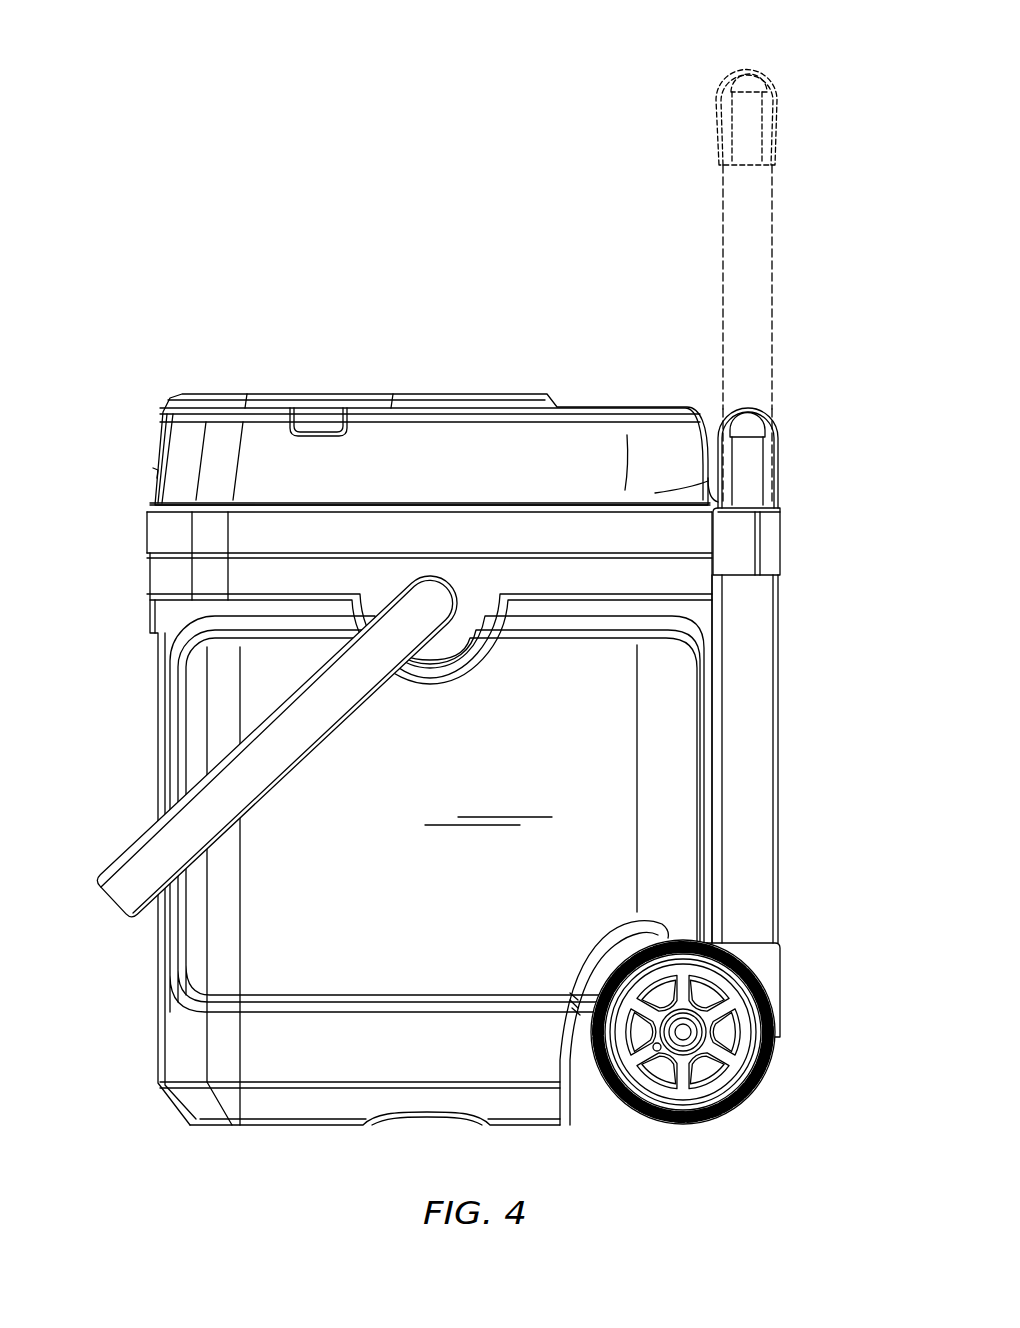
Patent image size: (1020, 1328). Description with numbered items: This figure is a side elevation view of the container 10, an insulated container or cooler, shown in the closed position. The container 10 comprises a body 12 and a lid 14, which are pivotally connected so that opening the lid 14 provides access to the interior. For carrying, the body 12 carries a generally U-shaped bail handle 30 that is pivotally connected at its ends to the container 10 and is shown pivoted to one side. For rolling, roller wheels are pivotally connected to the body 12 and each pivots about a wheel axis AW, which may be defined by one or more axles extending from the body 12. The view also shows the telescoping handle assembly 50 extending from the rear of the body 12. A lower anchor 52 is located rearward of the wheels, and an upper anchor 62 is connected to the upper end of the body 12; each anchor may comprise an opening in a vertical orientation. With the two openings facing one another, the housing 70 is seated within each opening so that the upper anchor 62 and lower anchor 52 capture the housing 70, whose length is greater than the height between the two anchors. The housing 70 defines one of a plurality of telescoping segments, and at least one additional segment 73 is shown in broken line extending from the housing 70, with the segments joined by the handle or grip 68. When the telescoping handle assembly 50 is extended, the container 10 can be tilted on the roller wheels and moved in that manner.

The container 10 is at (475, 597).
The body 12 is at (140, 703).
The lid 14 is at (143, 430).
The bail handle 30 is at (143, 863).
The telescoping handle assembly 50 is at (763, 597).
The lower anchor 52 is at (786, 972).
The upper anchor 62 is at (802, 545).
The handle or grip 68 is at (723, 82).
The housing 70 is at (788, 740).
The additional segment 73 is at (716, 272).
The wheel axis AW is at (697, 1040).